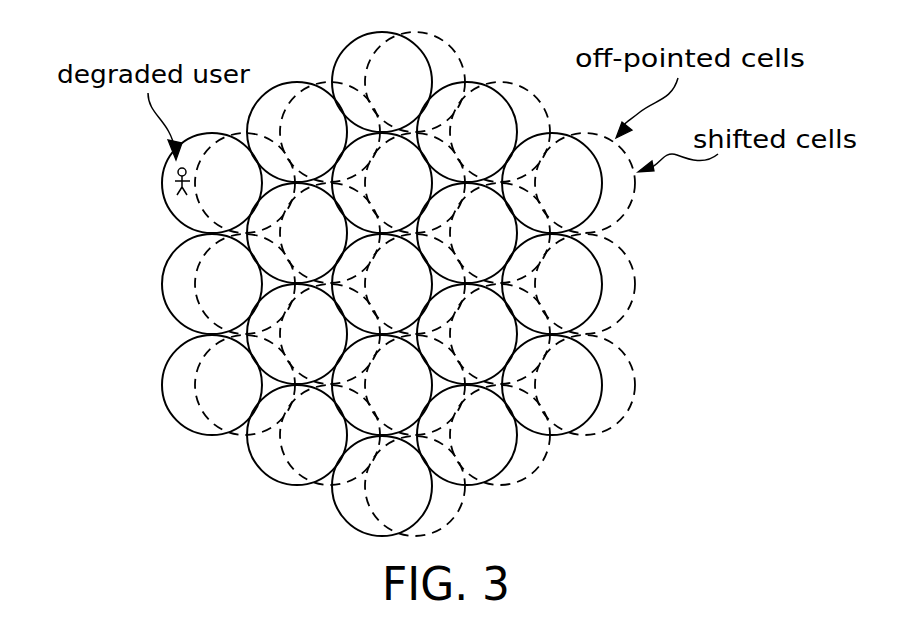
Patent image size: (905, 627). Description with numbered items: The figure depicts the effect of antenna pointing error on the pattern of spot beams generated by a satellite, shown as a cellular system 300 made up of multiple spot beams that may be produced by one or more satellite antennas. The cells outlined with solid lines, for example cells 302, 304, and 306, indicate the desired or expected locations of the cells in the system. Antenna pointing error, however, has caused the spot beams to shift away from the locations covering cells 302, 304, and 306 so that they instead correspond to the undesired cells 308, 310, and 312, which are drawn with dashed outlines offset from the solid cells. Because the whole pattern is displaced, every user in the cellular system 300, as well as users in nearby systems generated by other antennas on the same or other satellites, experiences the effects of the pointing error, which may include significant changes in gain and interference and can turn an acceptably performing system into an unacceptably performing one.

The cellular system 300 is at (401, 284).
The cell 302 is at (180, 424).
The cell 304 is at (180, 324).
The cell 306 is at (180, 223).
The undesired cell 308 is at (168, 412).
The undesired cell 310 is at (170, 311).
The undesired cell 312 is at (170, 210).